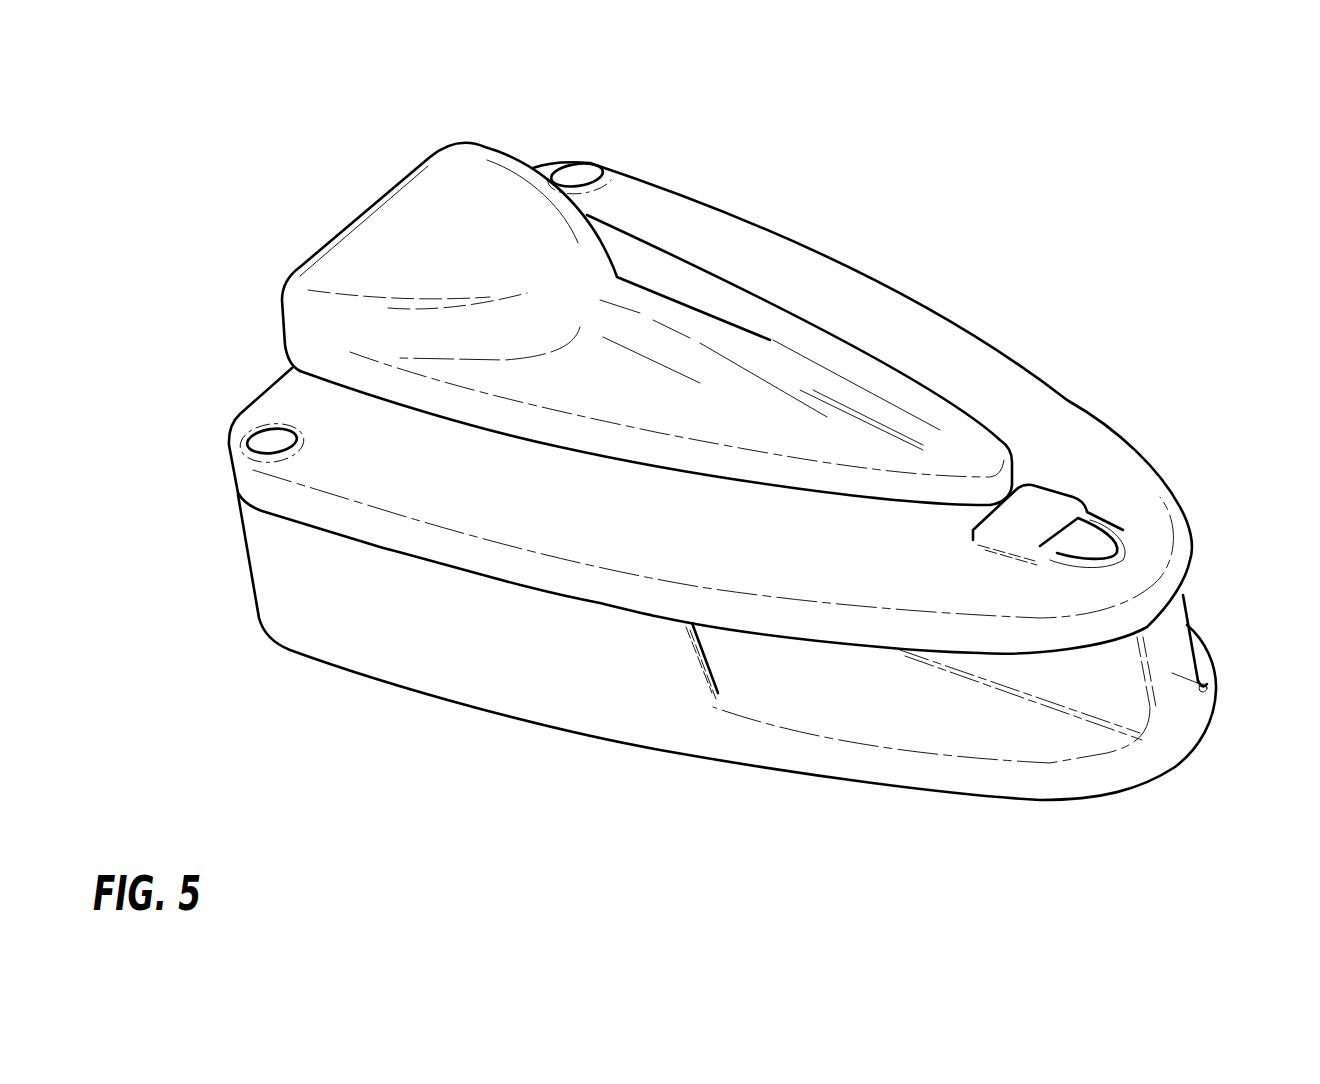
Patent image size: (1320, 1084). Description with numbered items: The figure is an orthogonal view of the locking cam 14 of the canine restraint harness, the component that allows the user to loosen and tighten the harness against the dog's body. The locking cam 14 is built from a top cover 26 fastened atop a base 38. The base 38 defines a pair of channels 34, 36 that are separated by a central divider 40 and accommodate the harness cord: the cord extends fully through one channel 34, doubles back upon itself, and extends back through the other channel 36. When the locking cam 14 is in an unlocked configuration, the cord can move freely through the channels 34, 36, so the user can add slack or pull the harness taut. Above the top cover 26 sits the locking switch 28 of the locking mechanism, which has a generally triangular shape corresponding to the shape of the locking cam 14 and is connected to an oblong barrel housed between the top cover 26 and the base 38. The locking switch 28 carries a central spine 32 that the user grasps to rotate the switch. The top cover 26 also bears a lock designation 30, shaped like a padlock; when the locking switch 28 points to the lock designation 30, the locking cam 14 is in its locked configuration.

The locking cam 14 is at (276, 70).
The top cover 26 is at (880, 310).
The locking switch 28 is at (730, 292).
The lock designation 30 is at (1065, 500).
The central spine 32 is at (635, 290).
The channel 34 is at (985, 735).
The channel 36 is at (1200, 650).
The base 38 is at (653, 727).
The central divider 40 is at (1208, 687).